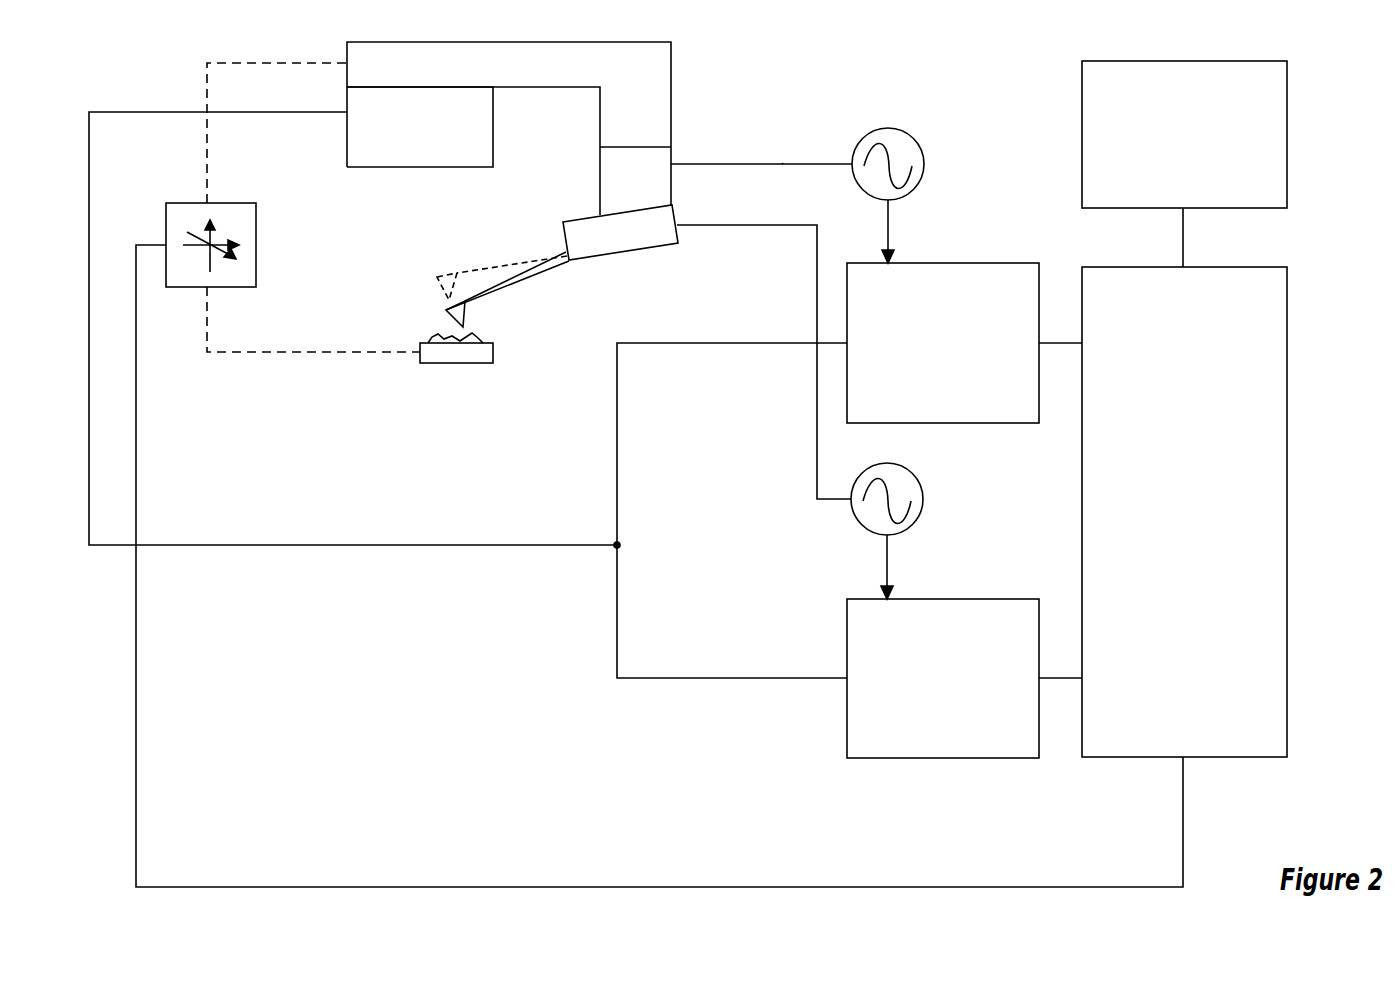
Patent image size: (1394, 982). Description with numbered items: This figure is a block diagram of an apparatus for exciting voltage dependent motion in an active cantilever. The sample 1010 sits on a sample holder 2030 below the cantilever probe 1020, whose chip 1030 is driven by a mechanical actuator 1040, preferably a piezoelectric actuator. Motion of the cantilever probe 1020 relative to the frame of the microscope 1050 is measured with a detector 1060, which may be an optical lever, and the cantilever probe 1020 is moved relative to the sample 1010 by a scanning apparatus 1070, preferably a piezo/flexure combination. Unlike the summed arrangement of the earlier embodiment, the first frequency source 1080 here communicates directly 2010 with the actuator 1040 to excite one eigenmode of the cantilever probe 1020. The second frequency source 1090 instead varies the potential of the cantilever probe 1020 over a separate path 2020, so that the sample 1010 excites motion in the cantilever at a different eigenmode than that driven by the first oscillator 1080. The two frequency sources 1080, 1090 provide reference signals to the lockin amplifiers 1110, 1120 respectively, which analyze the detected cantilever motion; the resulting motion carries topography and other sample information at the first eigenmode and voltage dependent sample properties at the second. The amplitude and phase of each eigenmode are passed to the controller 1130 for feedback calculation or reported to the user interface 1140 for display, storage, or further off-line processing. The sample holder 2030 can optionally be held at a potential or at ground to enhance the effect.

The sample 1010 is at (483, 340).
The cantilever probe 1020 is at (537, 272).
The chip of the cantilever probe 1030 is at (642, 250).
The mechanical actuator 1040 is at (671, 157).
The frame of the microscope 1050 is at (671, 82).
The detector 1060 is at (455, 167).
The scanning apparatus 1070 is at (238, 203).
The first frequency source 1080 is at (891, 128).
The second frequency source 1090 is at (890, 463).
The lockin amplifier 1110 is at (950, 263).
The lockin amplifier 1120 is at (950, 599).
The controller 1130 is at (1233, 267).
The user interface 1140 is at (1233, 61).
The direct communication 2010 is at (782, 164).
The reference signal line 2020 is at (817, 322).
The sample holder 2030 is at (440, 363).